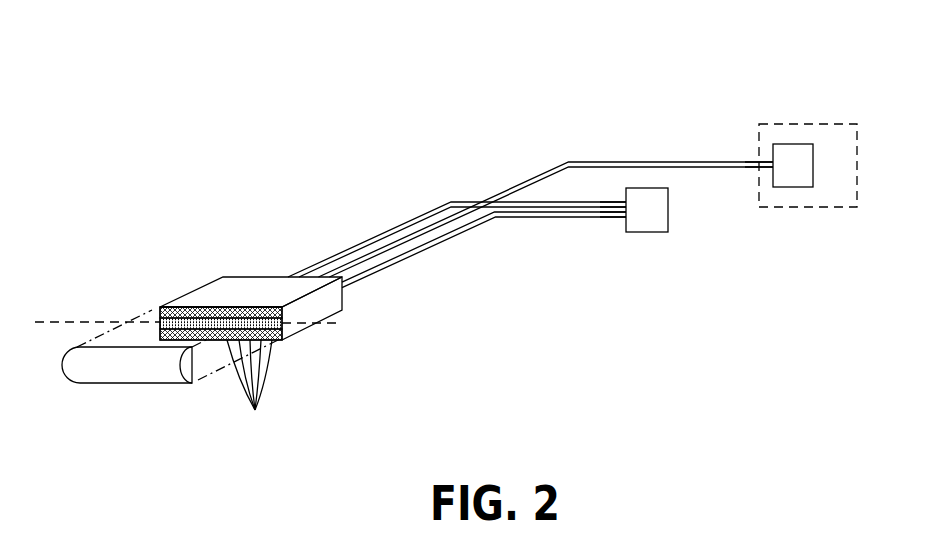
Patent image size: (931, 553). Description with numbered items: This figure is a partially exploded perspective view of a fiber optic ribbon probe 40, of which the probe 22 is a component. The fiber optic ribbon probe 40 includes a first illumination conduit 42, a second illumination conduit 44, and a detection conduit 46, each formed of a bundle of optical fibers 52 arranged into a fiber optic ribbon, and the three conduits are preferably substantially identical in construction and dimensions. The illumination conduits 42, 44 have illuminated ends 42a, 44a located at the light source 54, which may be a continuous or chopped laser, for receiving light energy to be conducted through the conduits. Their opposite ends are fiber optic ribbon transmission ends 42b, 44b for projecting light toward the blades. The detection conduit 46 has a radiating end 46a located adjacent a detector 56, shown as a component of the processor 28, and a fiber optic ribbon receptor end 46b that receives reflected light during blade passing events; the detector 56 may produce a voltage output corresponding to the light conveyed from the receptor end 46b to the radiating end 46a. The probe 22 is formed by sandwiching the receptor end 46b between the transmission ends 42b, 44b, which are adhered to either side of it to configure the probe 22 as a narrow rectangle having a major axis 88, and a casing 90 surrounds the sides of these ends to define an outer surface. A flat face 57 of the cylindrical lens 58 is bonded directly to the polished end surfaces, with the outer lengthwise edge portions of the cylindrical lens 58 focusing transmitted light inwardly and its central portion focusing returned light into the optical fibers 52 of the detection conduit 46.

The fiber optic ribbon probe 40 is at (247, 157).
The probe 22 is at (210, 280).
The casing 90 is at (160, 305).
The fiber optic ribbon receptor end 46b is at (160, 322).
The fiber optic ribbon transmission end 44b is at (283, 313).
The fiber optic ribbon transmission end 42b is at (285, 335).
The second illumination conduit 44 is at (344, 246).
The detection conduit 46 is at (429, 221).
The first illumination conduit 42 is at (398, 272).
The illuminated end 44a is at (625, 202).
The illuminated end 42a is at (625, 218).
The radiating end 46a is at (772, 163).
The light source 54 is at (657, 232).
The detector 56 is at (800, 143).
The processor 28 is at (828, 124).
The optical fibers 52 is at (252, 397).
The cylindrical lens 58 is at (122, 373).
The flat face 57 is at (200, 375).
The major axis 88 is at (50, 323).